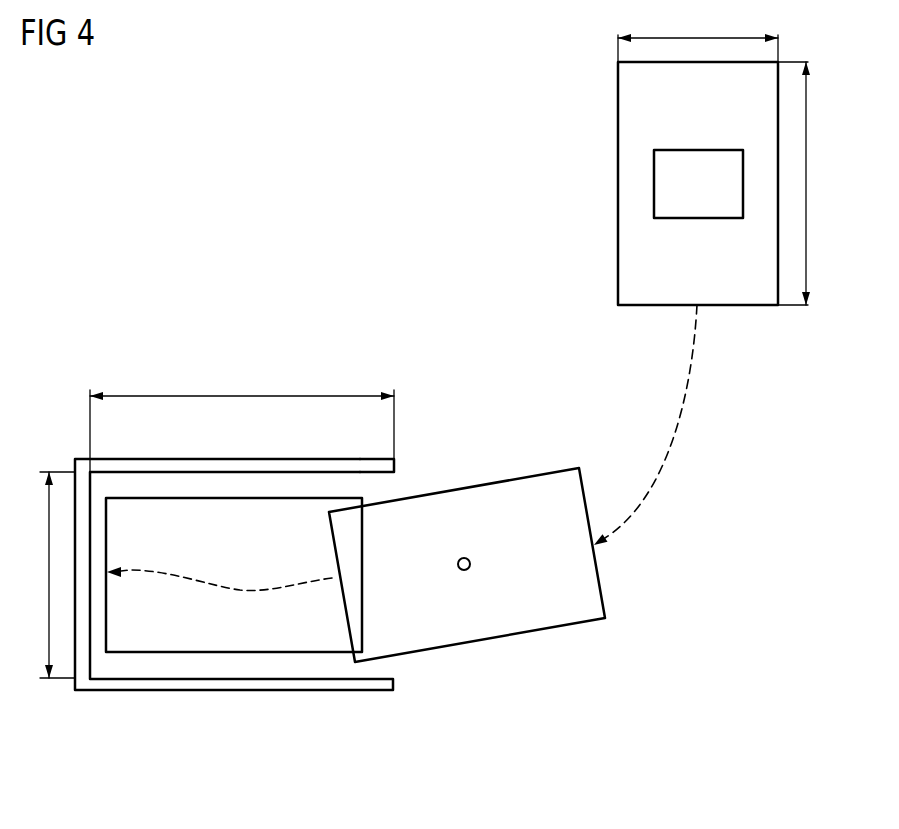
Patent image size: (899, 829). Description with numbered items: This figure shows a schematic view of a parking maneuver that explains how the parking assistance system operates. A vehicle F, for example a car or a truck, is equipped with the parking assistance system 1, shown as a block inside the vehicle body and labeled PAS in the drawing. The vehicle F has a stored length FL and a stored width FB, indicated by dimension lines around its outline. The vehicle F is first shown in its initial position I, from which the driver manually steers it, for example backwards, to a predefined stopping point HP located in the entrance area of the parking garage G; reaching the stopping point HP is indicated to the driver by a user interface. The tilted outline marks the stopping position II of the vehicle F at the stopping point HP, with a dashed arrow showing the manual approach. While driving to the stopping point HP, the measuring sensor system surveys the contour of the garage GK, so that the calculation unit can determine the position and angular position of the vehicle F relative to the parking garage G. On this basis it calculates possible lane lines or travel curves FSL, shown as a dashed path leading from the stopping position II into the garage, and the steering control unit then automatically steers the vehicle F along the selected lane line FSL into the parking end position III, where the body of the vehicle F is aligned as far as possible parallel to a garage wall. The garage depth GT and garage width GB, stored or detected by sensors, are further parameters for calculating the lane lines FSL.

The vehicle F is at (442, 400).
The initial position I is at (677, 183).
The stopping position II is at (491, 638).
The parking end position III is at (247, 652).
The parking assistance system 1 is at (698, 157).
The passive sensor unit PAS is at (698, 184).
The vehicle width FB is at (698, 37).
The vehicle length FL is at (805, 183).
The parking garage G is at (281, 541).
The contour of the garage GK is at (368, 473).
The garage depth GT is at (242, 435).
The garage width GB is at (46, 575).
The stopping point HP is at (464, 580).
The lane line and/or travel curve FSL is at (189, 579).